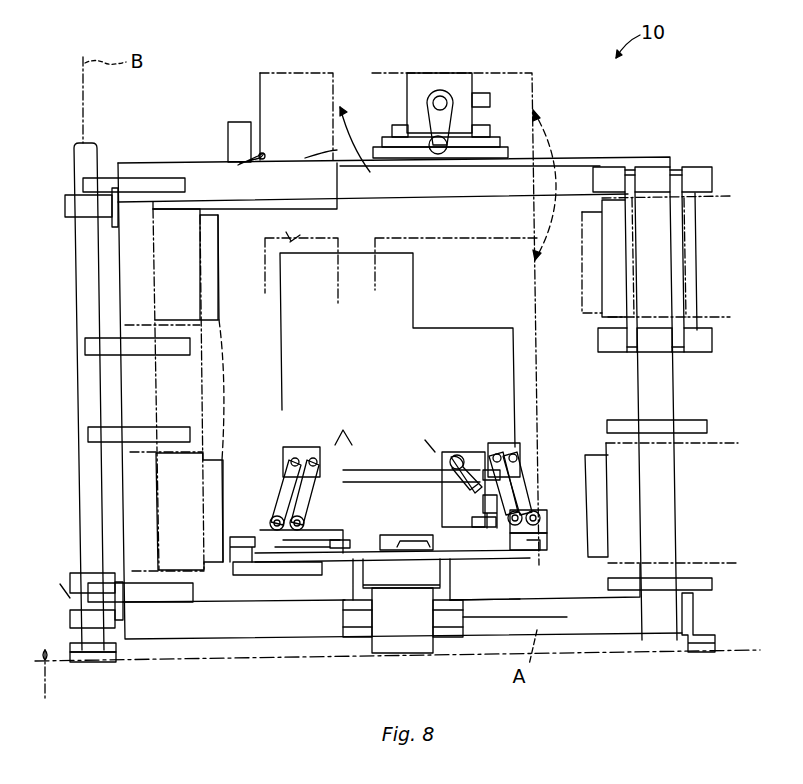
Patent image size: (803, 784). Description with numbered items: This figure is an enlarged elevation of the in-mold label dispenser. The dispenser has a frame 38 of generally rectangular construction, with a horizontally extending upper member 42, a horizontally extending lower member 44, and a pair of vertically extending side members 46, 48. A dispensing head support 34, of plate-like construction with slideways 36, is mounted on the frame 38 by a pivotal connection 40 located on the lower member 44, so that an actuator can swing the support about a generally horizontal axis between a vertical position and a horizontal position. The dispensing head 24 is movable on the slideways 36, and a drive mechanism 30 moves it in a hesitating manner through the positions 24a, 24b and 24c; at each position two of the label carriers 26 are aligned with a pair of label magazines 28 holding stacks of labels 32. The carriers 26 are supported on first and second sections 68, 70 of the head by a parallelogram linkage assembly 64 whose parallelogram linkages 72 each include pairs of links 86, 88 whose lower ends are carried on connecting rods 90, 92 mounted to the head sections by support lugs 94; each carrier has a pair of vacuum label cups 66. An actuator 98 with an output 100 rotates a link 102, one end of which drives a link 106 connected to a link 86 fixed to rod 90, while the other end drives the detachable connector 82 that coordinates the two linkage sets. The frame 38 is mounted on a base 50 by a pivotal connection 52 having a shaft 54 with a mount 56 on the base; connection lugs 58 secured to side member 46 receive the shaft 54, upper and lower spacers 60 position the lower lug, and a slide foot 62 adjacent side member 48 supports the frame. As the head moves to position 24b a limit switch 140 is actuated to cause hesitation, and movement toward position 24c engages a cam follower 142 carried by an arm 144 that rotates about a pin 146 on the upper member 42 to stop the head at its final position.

The dispensing head 24 is at (533, 70).
The initial position of dispensing head 24a is at (330, 233).
The second position of dispensing head 24b is at (327, 152).
The final position of dispensing head 24c is at (296, 63).
The label carriers 26 is at (313, 458).
The label magazine 28 is at (162, 320).
The drive mechanism 30 is at (432, 455).
The labels 32 is at (213, 330).
The dispensing head support 34 is at (530, 565).
The slideways 36 is at (400, 545).
The frame 38 is at (680, 375).
The pivotal connection 40 is at (452, 637).
The upper member 42 is at (575, 155).
The lower member 44 is at (578, 630).
The side member 46 is at (122, 378).
The side member 48 is at (680, 396).
The base 50 is at (50, 683).
The connection 52 is at (52, 585).
The shaft 54 is at (86, 470).
The mount 56 is at (100, 648).
The connection lugs 58 is at (66, 202).
The spacers 60 is at (76, 576).
The slide foot 62 is at (705, 652).
The parallelogram linkage assembly 64 is at (350, 429).
The label cups 66 is at (290, 460).
The first section of dispensing head 68 is at (535, 193).
The second section of dispensing head 70 is at (337, 178).
The parallelogram linkages 72 is at (280, 478).
The detachable connector 82 is at (350, 472).
The links 86 is at (300, 492).
The links 88 is at (285, 495).
The connecting rod 90 is at (340, 540).
The connecting rod 92 is at (270, 520).
The support lugs 94 is at (303, 540).
The actuator 98 is at (455, 458).
The output 100 is at (460, 465).
The link 102 is at (448, 467).
The link 106 is at (492, 468).
The limit switch 140 is at (230, 155).
The cam follower 142 is at (448, 142).
The arm 144 is at (437, 135).
The pin 146 is at (447, 110).